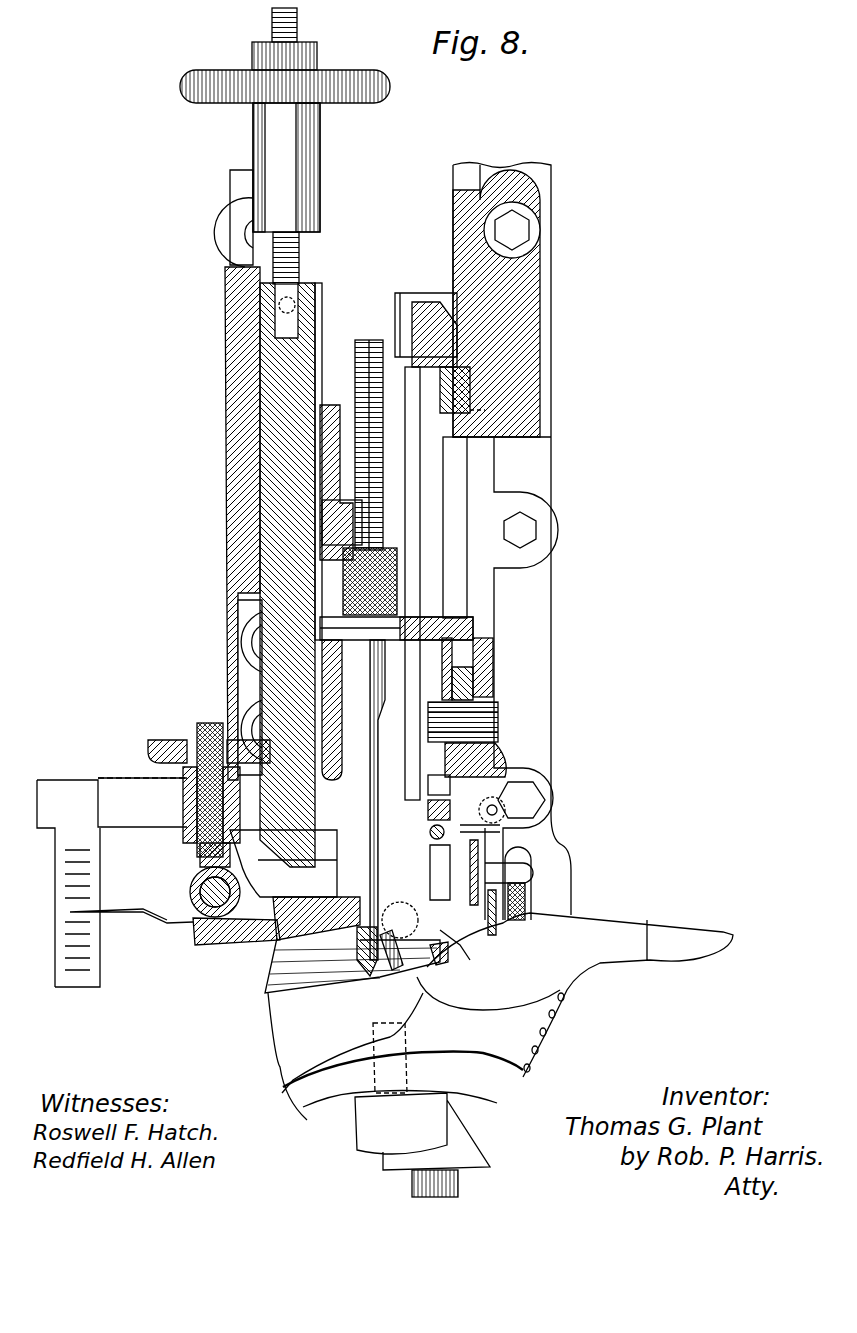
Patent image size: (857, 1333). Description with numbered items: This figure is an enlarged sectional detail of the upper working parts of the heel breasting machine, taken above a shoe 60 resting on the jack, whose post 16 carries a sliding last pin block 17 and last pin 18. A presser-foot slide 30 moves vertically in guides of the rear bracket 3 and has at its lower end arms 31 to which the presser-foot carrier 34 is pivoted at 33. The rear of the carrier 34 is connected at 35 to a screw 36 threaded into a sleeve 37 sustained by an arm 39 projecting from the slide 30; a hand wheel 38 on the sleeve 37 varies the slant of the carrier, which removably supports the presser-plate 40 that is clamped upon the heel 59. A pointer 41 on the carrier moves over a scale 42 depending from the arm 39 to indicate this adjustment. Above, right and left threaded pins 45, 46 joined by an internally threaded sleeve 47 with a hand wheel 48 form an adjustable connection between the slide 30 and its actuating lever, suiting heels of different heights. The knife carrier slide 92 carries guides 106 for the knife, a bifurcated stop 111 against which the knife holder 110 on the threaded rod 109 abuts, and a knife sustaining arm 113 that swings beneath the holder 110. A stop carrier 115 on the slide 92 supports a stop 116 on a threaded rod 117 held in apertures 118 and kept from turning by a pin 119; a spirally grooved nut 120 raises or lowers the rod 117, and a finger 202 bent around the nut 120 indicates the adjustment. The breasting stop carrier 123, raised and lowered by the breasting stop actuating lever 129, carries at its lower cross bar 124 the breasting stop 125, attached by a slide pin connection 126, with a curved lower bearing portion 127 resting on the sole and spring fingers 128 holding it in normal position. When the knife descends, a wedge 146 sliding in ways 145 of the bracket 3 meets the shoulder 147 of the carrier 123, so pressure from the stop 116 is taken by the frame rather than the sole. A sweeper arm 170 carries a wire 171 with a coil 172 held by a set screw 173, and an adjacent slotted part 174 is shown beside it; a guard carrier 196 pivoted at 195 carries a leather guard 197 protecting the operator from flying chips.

The rear bracket 3 is at (228, 333).
The post 16 is at (460, 1180).
The last pin block 17 is at (352, 1127).
The last pin 18 is at (405, 1078).
The presser-foot slide 30 is at (262, 407).
The arms 31 is at (305, 880).
The pivot 33 is at (398, 905).
The presser-foot carrier 34 is at (210, 945).
The connection 35 is at (203, 890).
The screw 36 is at (203, 848).
The sleeve 37 is at (183, 775).
The hand wheel 38 is at (148, 750).
The arm 39 is at (100, 830).
The presser-plate 40 is at (280, 925).
The pointer 41 is at (165, 920).
The scale 42 is at (93, 957).
The right threaded pin 45 is at (297, 22).
The left threaded pin 46 is at (299, 257).
The sleeve 47 is at (318, 145).
The hand wheel 48 is at (388, 90).
The heel 59 is at (280, 975).
The shoe 60 is at (290, 1040).
The knife carrier slide 92 is at (330, 457).
The guides 106 is at (415, 625).
The screw-threaded rod 109 is at (375, 340).
The knife holder 110 is at (343, 570).
The stop 111 is at (333, 525).
The knife sustaining arm 113 is at (473, 627).
The stop carrier 115 is at (493, 657).
The stop 116 is at (428, 785).
The screw-threaded rod 117 is at (505, 757).
The apertures 118 is at (450, 645).
The pin 119 is at (478, 692).
The nut 120 is at (498, 720).
The breasting stop carrier 123 is at (430, 478).
The lower cross bar 124 is at (428, 808).
The breasting stop 125 is at (430, 860).
The detachable connection 126 is at (430, 835).
The lower bearing portion 127 is at (438, 962).
The spring fingers 128 is at (555, 823).
The breasting stop actuating lever 129 is at (400, 295).
The ways 145 is at (540, 400).
The wedge 146 is at (455, 382).
The shoulder 147 is at (455, 345).
The sweeper arm 170 is at (520, 876).
The wire 171 is at (462, 952).
The coil 172 is at (485, 925).
The set screw 173 is at (455, 870).
The slot 174 is at (531, 862).
The pivotal support 195 is at (497, 806).
The guard carrier 196 is at (535, 845).
The guard 197 is at (530, 897).
The finger 202 is at (428, 726).